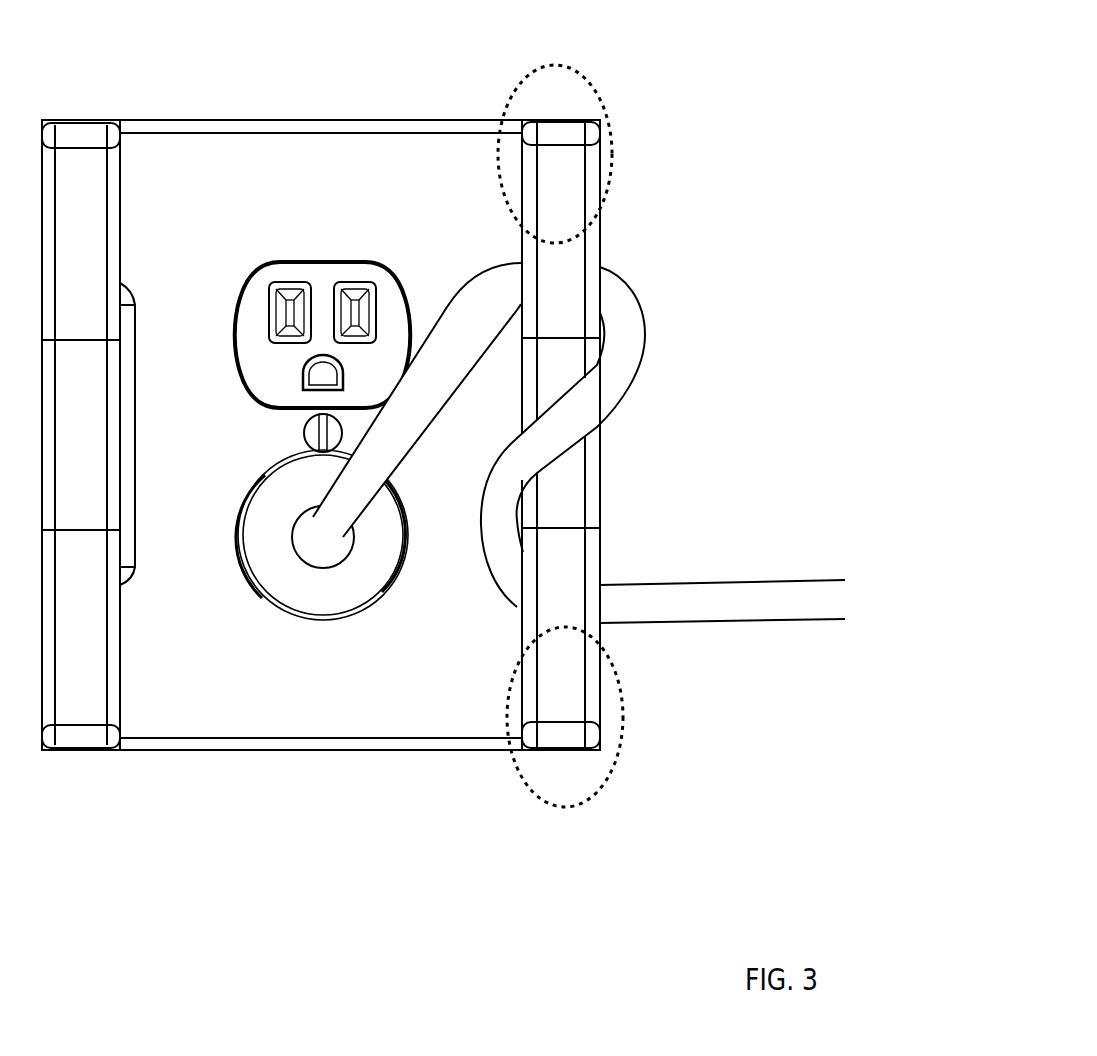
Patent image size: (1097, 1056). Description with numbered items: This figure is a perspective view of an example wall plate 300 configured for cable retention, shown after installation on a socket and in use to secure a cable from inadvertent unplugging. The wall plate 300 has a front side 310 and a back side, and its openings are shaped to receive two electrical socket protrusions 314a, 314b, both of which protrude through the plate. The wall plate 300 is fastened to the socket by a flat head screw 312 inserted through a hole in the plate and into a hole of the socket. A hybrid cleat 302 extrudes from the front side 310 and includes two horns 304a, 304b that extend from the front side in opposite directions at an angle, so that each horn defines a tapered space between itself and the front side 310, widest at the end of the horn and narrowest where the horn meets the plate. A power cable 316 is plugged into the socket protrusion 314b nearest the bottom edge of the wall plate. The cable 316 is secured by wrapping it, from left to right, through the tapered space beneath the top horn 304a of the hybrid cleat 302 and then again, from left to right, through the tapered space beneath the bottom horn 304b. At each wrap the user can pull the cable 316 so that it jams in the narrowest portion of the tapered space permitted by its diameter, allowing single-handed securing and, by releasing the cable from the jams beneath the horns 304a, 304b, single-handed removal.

The wall plate 300 is at (225, 99).
The hybrid cleat 302 is at (586, 505).
The top horn 304a is at (640, 95).
The bottom horn 304b is at (645, 807).
The front side 310 is at (408, 185).
The flat head screw 312 is at (290, 442).
The electrical socket protrusion 314a is at (243, 254).
The electrical socket protrusion 314b is at (238, 472).
The power cable 316 is at (708, 608).